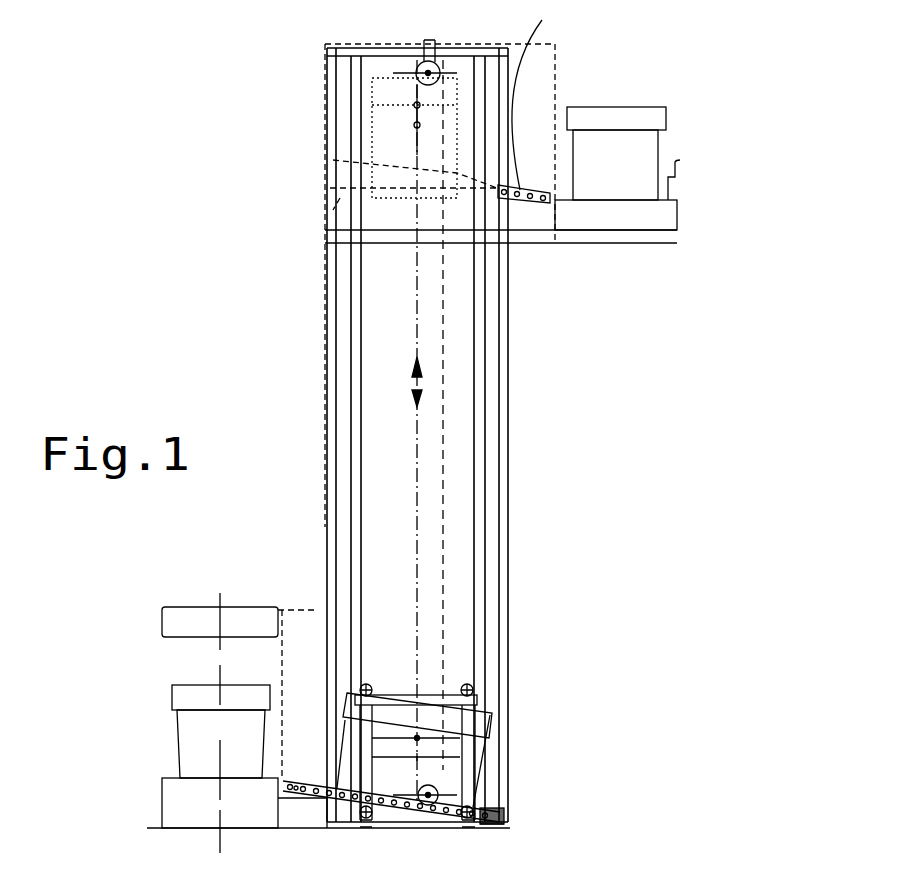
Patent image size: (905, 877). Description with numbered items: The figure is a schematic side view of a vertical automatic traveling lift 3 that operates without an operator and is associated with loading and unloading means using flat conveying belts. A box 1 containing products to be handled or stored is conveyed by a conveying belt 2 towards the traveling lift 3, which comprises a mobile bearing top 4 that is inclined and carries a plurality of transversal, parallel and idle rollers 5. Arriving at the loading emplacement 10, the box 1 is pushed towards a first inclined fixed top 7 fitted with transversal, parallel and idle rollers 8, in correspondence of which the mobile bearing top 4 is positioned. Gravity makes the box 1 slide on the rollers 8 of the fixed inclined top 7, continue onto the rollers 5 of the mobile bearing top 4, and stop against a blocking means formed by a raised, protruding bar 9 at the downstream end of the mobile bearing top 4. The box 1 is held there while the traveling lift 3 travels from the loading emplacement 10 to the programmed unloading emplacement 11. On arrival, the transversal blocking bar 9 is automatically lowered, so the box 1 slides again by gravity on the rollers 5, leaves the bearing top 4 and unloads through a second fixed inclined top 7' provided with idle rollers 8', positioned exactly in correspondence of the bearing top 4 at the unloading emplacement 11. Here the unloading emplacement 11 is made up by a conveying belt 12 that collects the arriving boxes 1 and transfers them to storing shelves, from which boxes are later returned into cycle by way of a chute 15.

The box 1 is at (650, 147).
The conveying belt 2 is at (183, 807).
The traveling lift 3 is at (502, 475).
The mobile bearing top 4 is at (320, 212).
The rollers 5 is at (397, 797).
The first inclined fixed top 7 is at (321, 724).
The second fixed inclined top 7' is at (544, 95).
The rollers 8 is at (304, 831).
The rollers 8' is at (540, 244).
The blocking bar 9 is at (503, 825).
The loading emplacement 10 is at (330, 658).
The unloading emplacement 11 is at (552, 157).
The conveying belt 12 is at (667, 220).
The chute 15 is at (183, 615).